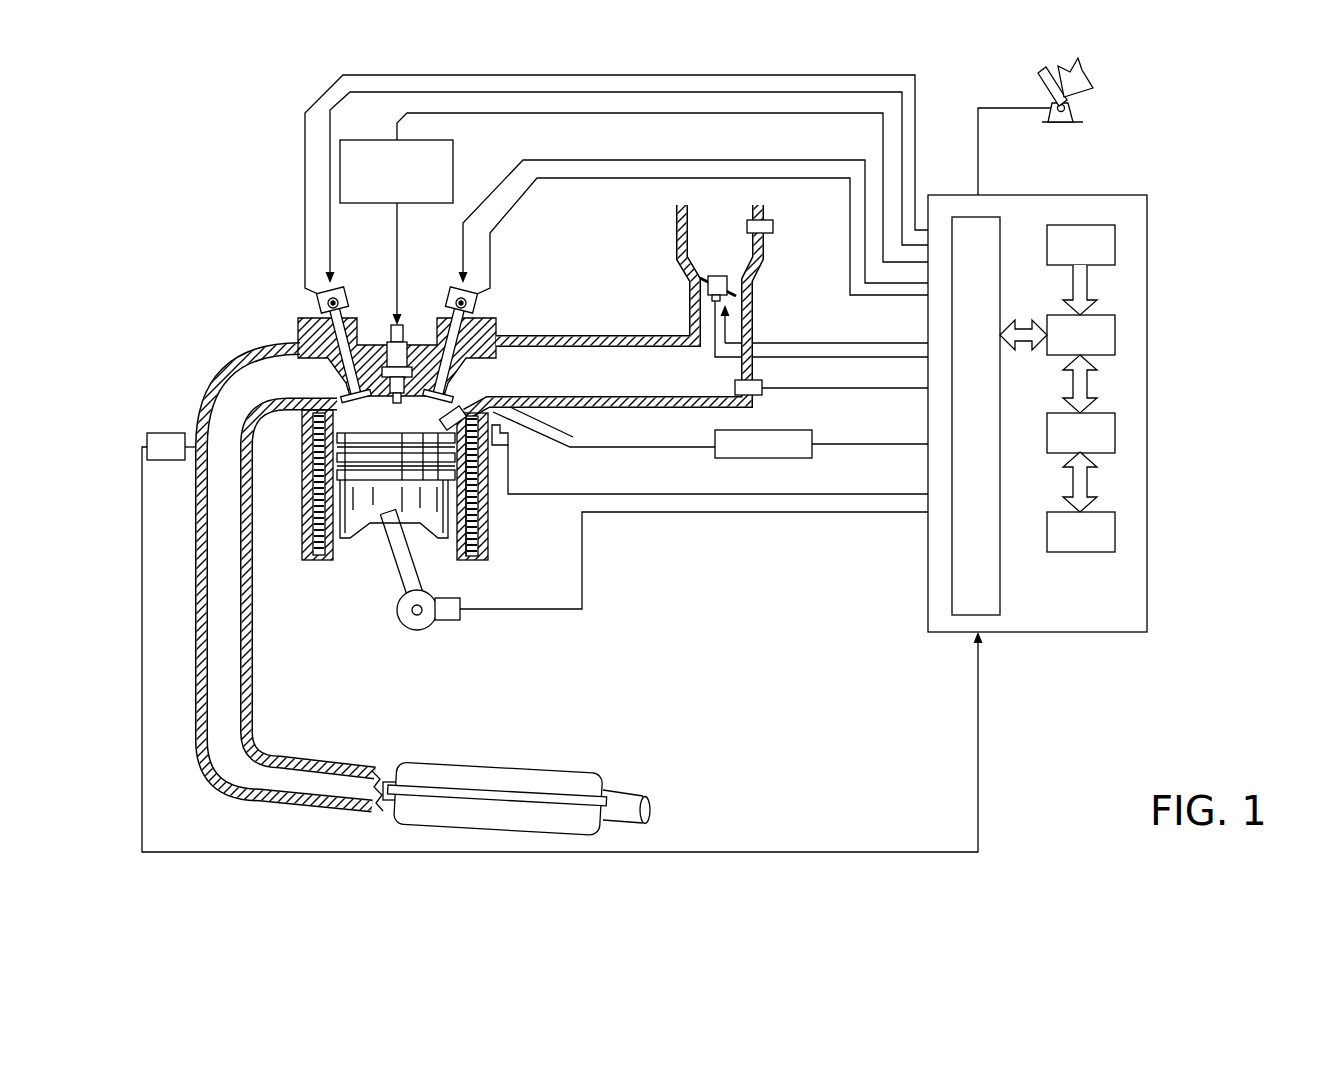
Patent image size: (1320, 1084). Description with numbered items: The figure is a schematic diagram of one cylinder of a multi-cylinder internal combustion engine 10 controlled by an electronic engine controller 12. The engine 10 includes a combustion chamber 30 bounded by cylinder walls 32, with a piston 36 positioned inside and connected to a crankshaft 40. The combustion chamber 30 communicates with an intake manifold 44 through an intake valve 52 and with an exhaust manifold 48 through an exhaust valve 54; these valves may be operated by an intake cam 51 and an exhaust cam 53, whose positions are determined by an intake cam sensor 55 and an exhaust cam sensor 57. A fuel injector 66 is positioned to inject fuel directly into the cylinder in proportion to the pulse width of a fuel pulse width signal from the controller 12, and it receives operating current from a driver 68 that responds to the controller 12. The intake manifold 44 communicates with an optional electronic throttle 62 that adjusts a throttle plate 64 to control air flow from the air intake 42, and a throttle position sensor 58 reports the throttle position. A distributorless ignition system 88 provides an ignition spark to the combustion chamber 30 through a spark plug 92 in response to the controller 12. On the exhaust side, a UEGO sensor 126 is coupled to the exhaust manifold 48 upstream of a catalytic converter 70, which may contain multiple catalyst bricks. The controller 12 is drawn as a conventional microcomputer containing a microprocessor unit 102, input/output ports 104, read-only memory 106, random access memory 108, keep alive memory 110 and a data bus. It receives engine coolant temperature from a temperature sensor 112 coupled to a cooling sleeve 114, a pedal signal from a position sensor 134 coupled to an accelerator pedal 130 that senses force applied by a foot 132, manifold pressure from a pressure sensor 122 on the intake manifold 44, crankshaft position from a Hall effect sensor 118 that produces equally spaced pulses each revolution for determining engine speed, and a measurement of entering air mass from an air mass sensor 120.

The internal combustion engine 10 is at (497, 496).
The electronic engine controller 12 is at (1080, 399).
The combustion chamber 30 is at (393, 420).
The cylinder walls 32 is at (343, 552).
The piston 36 is at (380, 510).
The crankshaft 40 is at (407, 627).
The air intake 42 is at (728, 250).
The intake manifold 44 is at (673, 384).
The exhaust manifold 48 is at (283, 392).
The intake cam 51 is at (456, 292).
The intake valve 52 is at (432, 380).
The exhaust cam 53 is at (336, 292).
The exhaust valve 54 is at (330, 372).
The intake cam sensor 55 is at (470, 310).
The exhaust cam sensor 57 is at (318, 305).
The throttle position sensor 58 is at (697, 303).
The electronic throttle 62 is at (730, 283).
The throttle plate 64 is at (700, 280).
The fuel injector 66 is at (520, 425).
The driver 68 is at (745, 458).
The catalytic converter 70 is at (415, 765).
The distributorless ignition system 88 is at (352, 140).
The spark plug 92 is at (402, 340).
The microprocessor unit 102 is at (1115, 335).
The input/output ports 104 is at (1000, 225).
The read-only memory 106 is at (1115, 242).
The random access memory 108 is at (1115, 432).
The keep alive memory 110 is at (1115, 532).
The temperature sensor 112 is at (505, 445).
The cooling sleeve 114 is at (478, 512).
The Hall effect sensor 118 is at (442, 622).
The air mass sensor 120 is at (770, 221).
The pressure sensor 122 is at (760, 397).
The Universal Exhaust Gas Oxygen (UEGO) sensor 126 is at (150, 440).
The accelerator pedal 130 is at (1095, 92).
The foot 132 is at (1090, 76).
The position sensor 134 is at (1077, 108).